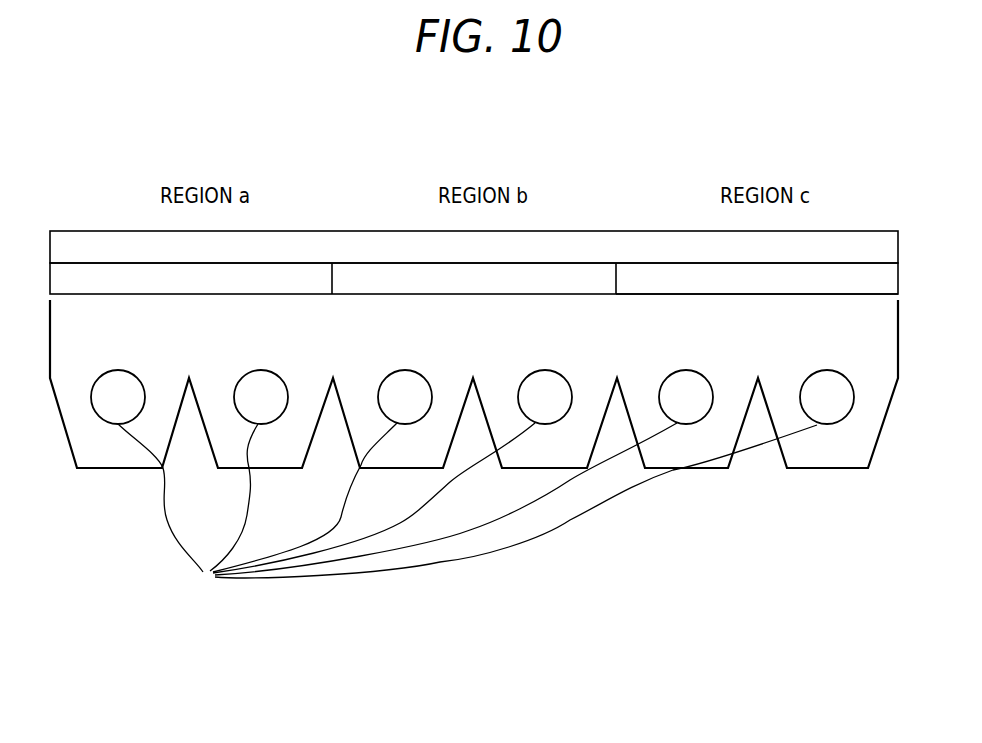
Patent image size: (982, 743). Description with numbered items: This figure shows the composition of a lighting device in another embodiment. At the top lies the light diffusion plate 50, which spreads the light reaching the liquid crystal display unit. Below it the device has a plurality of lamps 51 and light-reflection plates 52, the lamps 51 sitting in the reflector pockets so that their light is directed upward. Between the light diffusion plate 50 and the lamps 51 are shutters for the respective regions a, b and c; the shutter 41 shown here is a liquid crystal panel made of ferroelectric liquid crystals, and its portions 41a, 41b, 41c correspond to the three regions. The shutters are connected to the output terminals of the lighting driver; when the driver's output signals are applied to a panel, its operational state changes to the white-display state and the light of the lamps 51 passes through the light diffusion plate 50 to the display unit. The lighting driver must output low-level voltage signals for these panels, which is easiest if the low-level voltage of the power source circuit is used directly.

The light diffusion plate 50 is at (82, 231).
The shutter 41 is at (48, 276).
The heater board region a section 41a is at (158, 283).
The heater board region b section 41b is at (467, 285).
The heater board region c section 41c is at (738, 283).
The lamps 51 is at (467, 511).
The light-reflection plates 52 is at (272, 470).